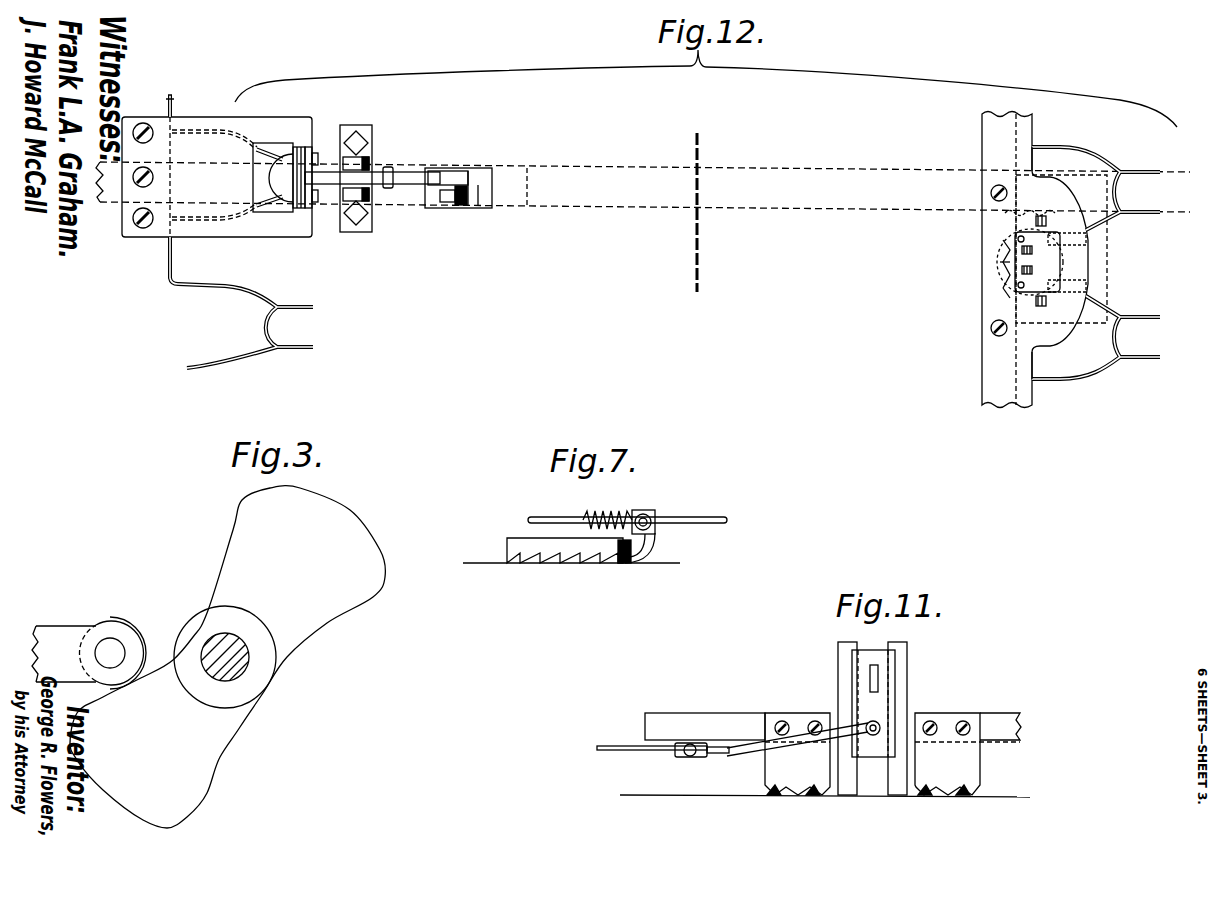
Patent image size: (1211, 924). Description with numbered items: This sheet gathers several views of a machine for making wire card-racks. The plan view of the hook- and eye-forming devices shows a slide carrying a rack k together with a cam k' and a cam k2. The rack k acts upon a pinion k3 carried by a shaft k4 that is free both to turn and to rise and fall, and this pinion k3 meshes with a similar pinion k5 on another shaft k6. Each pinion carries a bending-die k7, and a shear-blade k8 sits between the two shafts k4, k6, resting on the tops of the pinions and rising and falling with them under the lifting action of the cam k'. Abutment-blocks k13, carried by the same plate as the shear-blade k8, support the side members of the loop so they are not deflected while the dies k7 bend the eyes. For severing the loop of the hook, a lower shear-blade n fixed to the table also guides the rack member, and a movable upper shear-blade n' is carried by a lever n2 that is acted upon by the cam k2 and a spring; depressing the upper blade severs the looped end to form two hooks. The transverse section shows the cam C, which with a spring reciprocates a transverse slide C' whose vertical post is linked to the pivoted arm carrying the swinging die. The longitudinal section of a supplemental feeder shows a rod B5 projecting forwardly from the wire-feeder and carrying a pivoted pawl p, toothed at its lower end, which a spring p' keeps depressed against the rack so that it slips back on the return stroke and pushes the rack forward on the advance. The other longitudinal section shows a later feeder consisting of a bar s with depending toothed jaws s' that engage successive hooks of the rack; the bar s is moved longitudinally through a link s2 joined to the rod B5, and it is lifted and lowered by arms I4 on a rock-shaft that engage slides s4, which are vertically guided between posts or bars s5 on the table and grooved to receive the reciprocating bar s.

In FIG. 12, the lower shear-blade n is at (217, 231).
In FIG. 12, the upper shear-blade n' is at (285, 177).
In FIG. 12, the lever n2 is at (366, 178).
In FIG. 12, the cam k2 is at (643, 212).
In FIG. 12, the rack k is at (1064, 263).
In FIG. 12, the cam k' is at (1071, 260).
In FIG. 12, the pinion k3 is at (1003, 241).
In FIG. 12, the shaft k4 is at (1003, 250).
In FIG. 12, the pinion k5 is at (1003, 280).
In FIG. 12, the shaft k6 is at (1005, 296).
In FIG. 12, the bending-die k7 is at (1010, 262).
In FIG. 12, the shear-blade k8 is at (1040, 262).
In FIG. 12, the abutment-blocks k13 is at (1041, 218).
In FIG. 3, the cam C is at (227, 657).
In FIG. 3, the transverse slide C' is at (89, 653).
In FIG. 7, the pawl p is at (565, 550).
In FIG. 7, the spring p' is at (610, 528).
In FIG. 7, the rod B5 is at (627, 507).
In FIG. 11, the rod B5 is at (652, 741).
In FIG. 11, the bar s is at (833, 727).
In FIG. 11, the toothed jaws s' is at (872, 754).
In FIG. 11, the link s2 is at (752, 752).
In FIG. 11, the slides s4 is at (871, 716).
In FIG. 11, the posts or bars s5 is at (840, 690).
In FIG. 11, the arms I4 is at (876, 680).